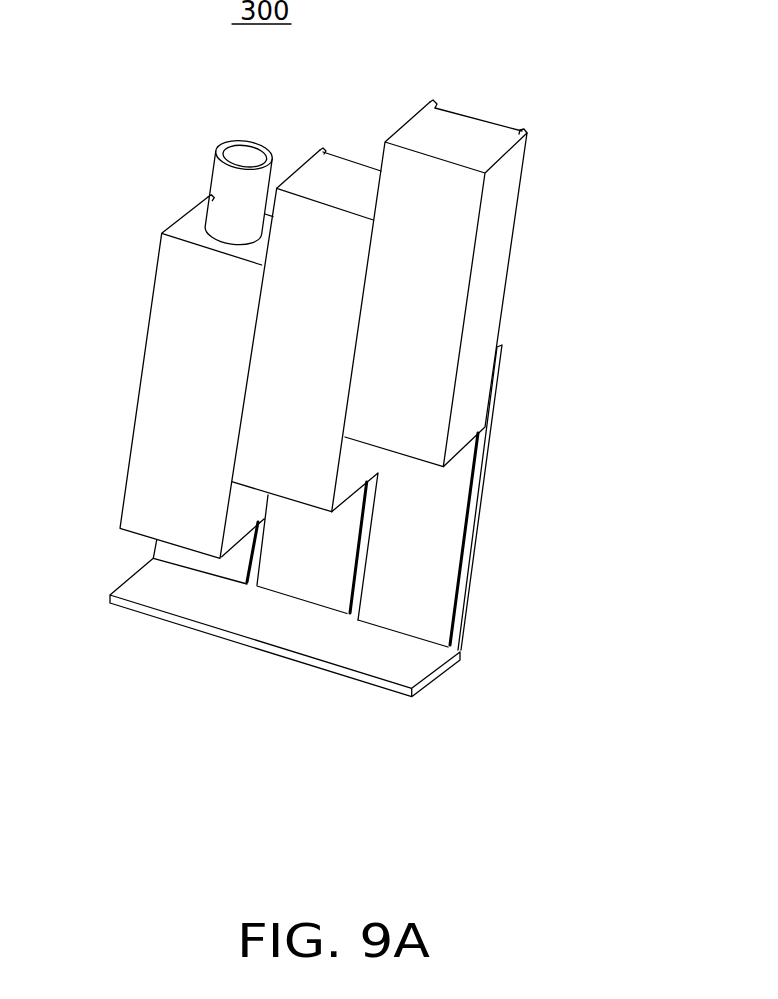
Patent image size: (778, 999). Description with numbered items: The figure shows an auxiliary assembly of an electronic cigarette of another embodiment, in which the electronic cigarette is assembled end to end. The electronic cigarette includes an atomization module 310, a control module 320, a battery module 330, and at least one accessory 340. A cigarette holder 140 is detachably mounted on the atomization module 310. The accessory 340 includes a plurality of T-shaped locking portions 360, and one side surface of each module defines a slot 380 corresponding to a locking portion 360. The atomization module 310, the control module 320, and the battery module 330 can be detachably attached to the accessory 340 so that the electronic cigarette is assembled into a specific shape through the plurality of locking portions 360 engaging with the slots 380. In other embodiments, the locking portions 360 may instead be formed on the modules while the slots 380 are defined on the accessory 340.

The cigarette holder 140 is at (227, 188).
The atomization module 310 is at (182, 285).
The control module 320 is at (308, 220).
The battery module 330 is at (450, 240).
The accessory 340 is at (455, 528).
The locking portion 360 is at (290, 562).
The slot 380 is at (520, 132).